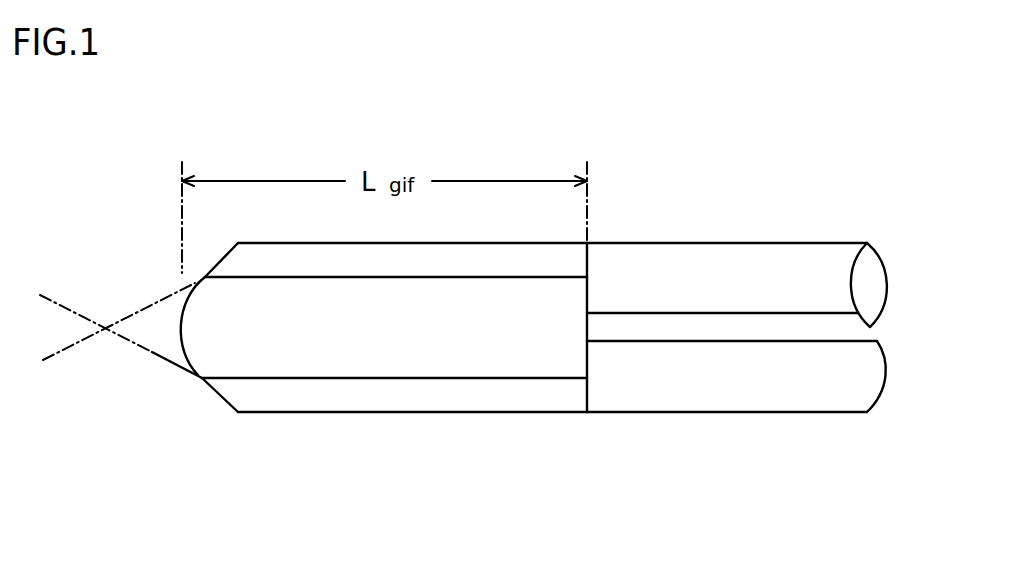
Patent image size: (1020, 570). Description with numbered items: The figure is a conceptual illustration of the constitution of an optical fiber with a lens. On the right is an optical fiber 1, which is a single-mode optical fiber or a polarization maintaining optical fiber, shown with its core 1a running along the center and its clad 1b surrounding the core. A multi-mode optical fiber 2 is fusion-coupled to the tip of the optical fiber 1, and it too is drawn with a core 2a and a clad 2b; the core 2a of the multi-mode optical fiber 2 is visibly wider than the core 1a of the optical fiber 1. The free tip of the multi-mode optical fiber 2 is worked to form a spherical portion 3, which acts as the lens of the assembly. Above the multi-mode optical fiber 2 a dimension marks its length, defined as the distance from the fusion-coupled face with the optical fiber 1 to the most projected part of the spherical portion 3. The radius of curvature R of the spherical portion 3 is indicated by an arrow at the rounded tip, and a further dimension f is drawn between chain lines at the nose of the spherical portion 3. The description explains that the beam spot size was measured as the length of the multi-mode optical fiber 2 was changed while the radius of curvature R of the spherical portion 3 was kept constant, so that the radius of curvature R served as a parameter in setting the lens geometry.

The optical fiber 1 is at (737, 344).
The core 1a is at (653, 327).
The clad 1b is at (703, 268).
The multi-mode optical fiber 2 is at (360, 384).
The core 2a is at (500, 343).
The clad 2b is at (330, 395).
The spherical portion 3 is at (173, 340).
The radius of curvature R is at (255, 327).
The offset distance f is at (105, 330).